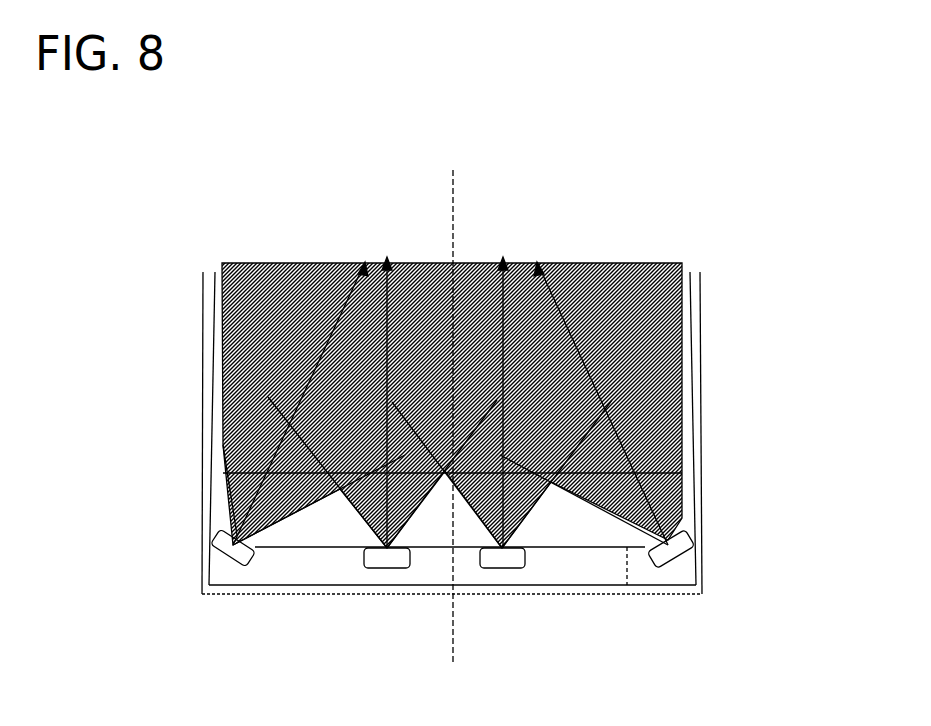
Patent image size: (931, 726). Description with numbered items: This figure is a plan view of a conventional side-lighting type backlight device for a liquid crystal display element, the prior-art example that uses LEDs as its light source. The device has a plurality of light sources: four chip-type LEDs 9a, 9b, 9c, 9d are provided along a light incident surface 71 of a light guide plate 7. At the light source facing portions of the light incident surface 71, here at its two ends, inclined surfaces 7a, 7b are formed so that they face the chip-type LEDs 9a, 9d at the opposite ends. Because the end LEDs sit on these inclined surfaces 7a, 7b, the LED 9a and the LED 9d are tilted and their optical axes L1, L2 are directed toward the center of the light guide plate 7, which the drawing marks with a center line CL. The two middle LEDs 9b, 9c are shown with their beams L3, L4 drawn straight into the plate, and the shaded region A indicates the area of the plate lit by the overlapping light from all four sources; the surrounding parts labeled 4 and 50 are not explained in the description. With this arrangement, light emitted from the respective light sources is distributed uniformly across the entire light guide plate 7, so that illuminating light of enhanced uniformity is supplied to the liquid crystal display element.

The frame 4 is at (686, 308).
The housing 50 is at (705, 422).
The light guide plate 7 is at (328, 552).
The inclined surface 7a is at (215, 516).
The inclined surface 7b is at (700, 518).
The light incident surface 71 is at (627, 585).
The chip-type LED 9a is at (217, 562).
The chip-type LED 9b is at (385, 568).
The chip-type LED 9c is at (500, 568).
The chip-type LED 9d is at (697, 565).
The illuminated region A is at (620, 280).
The center line CL is at (450, 202).
The optical axis L1 is at (357, 280).
The optical axis L2 is at (540, 283).
The light beam L3 is at (393, 283).
The light beam L4 is at (497, 278).